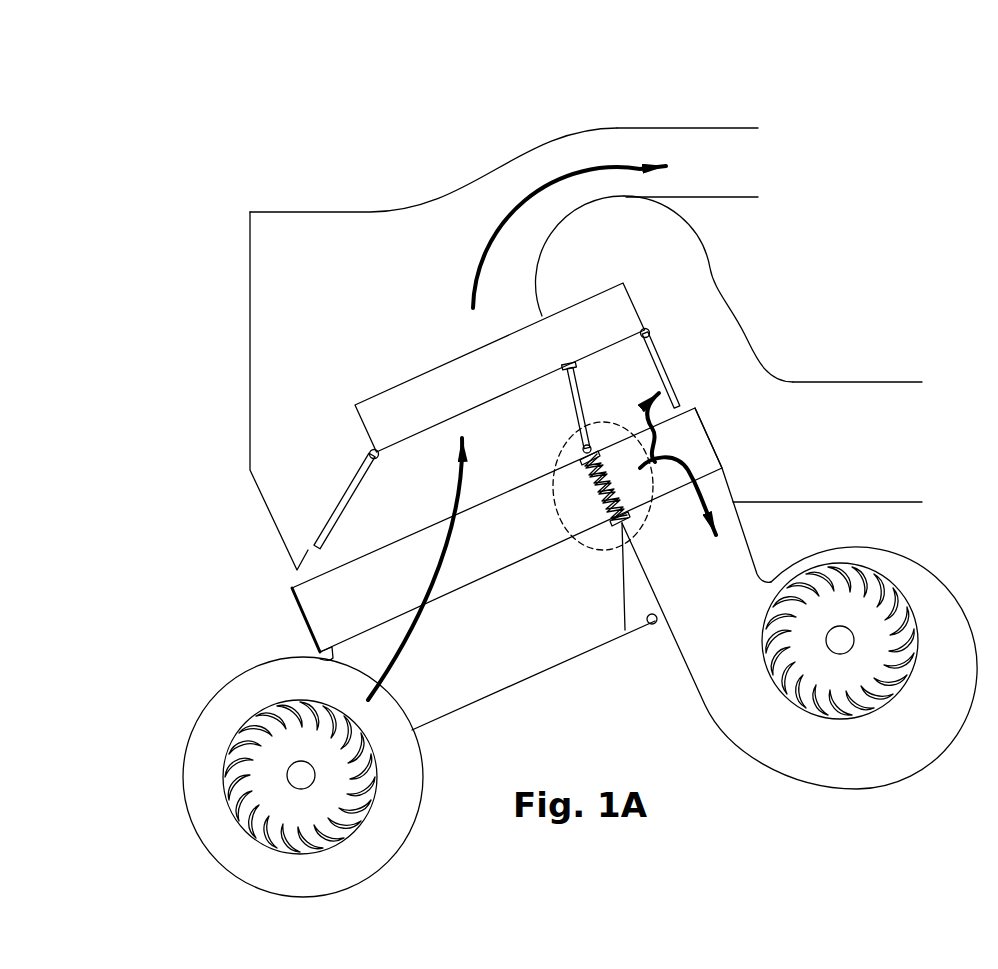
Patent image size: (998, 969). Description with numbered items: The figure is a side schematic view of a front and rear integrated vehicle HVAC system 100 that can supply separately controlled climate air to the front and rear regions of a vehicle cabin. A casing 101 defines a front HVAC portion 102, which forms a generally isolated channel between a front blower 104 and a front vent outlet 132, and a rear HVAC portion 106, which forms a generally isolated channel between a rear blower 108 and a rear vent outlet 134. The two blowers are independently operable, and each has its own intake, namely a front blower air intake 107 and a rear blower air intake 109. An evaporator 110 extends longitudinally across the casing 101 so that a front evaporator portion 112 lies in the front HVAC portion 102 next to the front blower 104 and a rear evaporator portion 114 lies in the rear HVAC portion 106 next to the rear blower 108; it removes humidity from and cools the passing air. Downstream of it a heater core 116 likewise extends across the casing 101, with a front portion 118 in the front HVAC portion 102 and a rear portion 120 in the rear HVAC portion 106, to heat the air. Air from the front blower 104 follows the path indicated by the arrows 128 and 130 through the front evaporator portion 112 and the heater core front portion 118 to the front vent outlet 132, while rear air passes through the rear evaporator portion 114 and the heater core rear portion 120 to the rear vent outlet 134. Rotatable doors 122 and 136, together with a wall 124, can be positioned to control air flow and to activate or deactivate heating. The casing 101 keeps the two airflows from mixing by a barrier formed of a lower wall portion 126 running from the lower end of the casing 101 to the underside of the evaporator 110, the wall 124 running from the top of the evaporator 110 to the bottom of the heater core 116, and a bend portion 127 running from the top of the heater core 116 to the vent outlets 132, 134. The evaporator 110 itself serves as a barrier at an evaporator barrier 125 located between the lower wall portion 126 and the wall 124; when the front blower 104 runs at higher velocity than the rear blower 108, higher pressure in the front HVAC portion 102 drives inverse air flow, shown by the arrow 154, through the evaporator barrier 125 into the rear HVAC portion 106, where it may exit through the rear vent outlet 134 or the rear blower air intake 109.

The integrated vehicle HVAC system 100 is at (395, 324).
The casing 101 is at (298, 212).
The front HVAC portion 102 is at (280, 374).
The front blower 104 is at (203, 708).
The rear HVAC portion 106 is at (793, 292).
The front blower air intake 107 is at (372, 832).
The rear blower 108 is at (947, 617).
The rear blower air intake 109 is at (895, 715).
The evaporator 110 is at (462, 563).
The front evaporator portion 112 is at (328, 595).
The rear evaporator portion 114 is at (683, 428).
The heater core 116 is at (442, 380).
The heater core front portion 118 is at (350, 418).
The heater core rear portion 120 is at (615, 312).
The rotatable door 122 is at (337, 512).
The wall 124 is at (576, 414).
The evaporator barrier 125 is at (590, 522).
The lower wall portion 126 is at (648, 572).
The bend portion 127 is at (593, 200).
The air flow path arrow 128 is at (397, 660).
The air flow path arrow 130 is at (518, 208).
The front vent outlet 132 is at (745, 151).
The rear vent outlet 134 is at (906, 445).
The rotatable door 136 is at (670, 367).
The inverse air flow arrow 154 is at (643, 413).